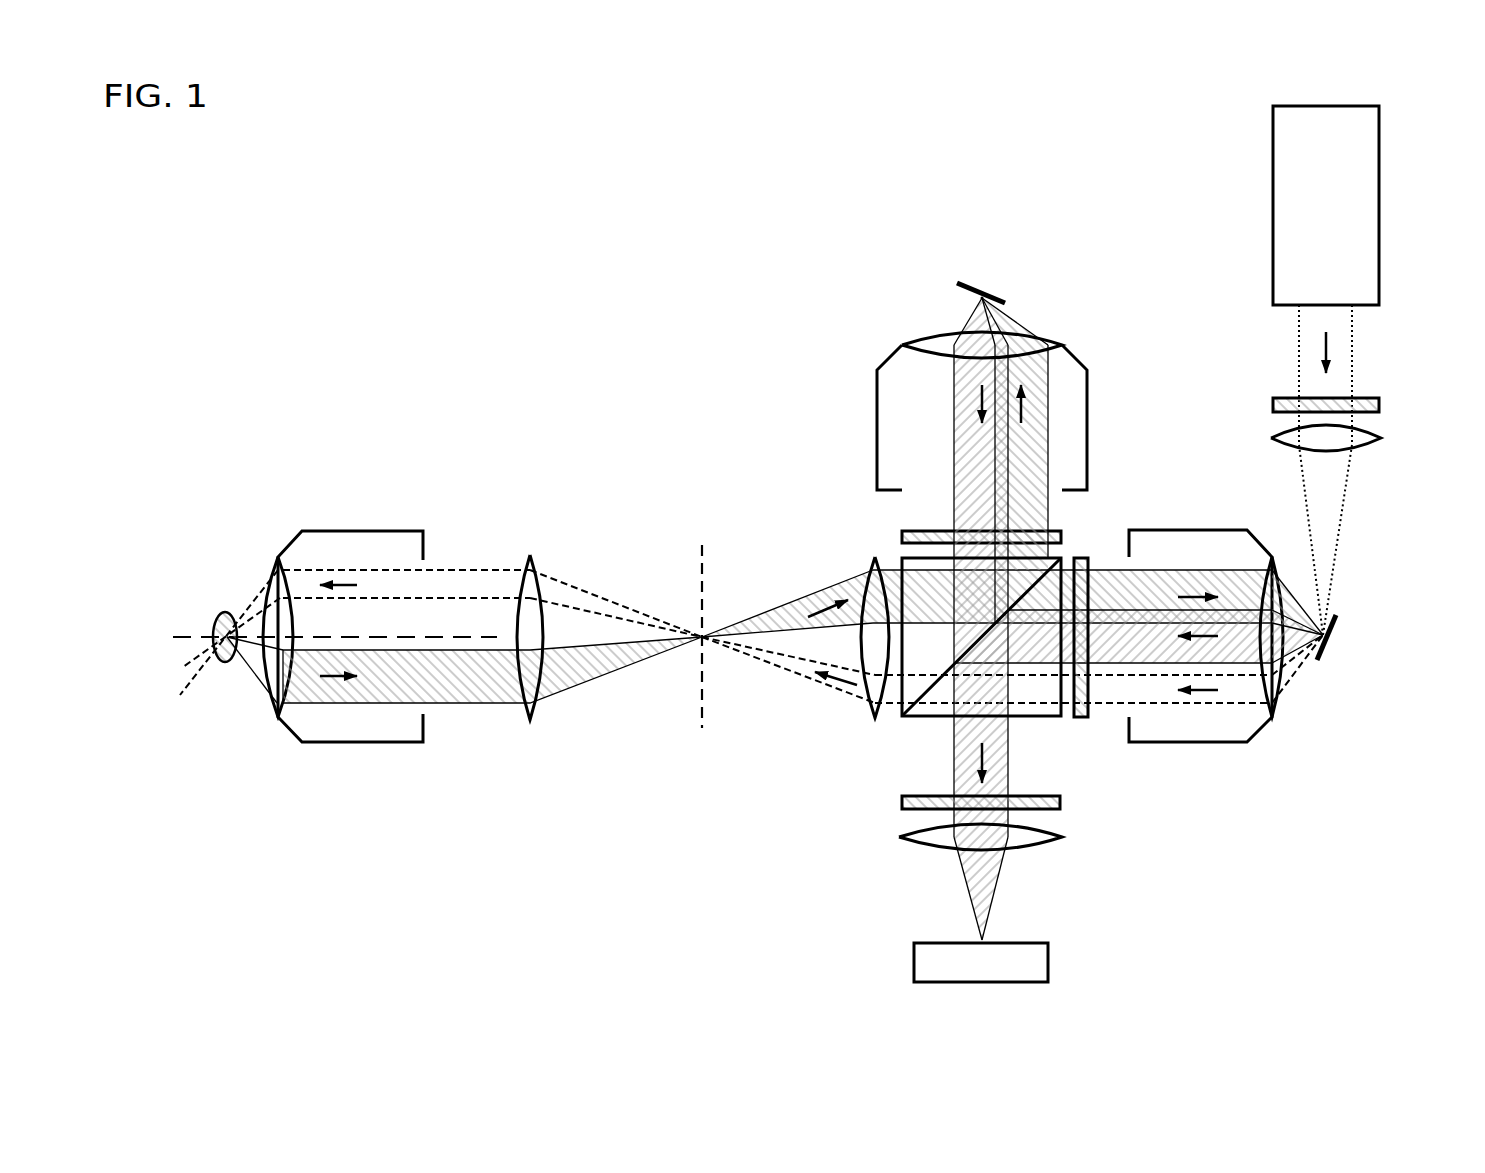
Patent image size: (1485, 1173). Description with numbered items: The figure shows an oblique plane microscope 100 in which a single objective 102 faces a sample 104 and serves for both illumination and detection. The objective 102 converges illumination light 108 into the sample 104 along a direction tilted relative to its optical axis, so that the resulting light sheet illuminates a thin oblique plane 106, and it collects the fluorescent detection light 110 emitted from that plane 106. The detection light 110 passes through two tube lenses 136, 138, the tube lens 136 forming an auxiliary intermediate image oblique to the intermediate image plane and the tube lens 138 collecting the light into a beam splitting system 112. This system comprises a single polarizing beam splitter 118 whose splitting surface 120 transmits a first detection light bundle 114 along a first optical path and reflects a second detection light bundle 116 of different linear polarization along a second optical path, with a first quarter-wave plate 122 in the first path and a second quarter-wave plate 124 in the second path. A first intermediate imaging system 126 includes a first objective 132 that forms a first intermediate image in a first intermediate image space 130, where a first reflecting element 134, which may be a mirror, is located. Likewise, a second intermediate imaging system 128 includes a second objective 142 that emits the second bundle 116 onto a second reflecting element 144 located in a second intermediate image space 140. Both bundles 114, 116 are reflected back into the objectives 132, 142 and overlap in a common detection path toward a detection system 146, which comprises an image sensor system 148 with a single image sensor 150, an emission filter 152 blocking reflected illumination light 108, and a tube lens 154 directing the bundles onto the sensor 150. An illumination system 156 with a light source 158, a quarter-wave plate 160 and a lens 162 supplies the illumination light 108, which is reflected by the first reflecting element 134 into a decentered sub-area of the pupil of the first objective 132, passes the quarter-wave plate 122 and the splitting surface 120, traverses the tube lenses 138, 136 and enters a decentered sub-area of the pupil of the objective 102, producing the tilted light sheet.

The oblique plane microscope 100 is at (614, 137).
The objective 102 is at (356, 529).
The sample 104 is at (222, 611).
The plane 106 is at (187, 683).
The illumination light 108 is at (431, 582).
The detection light 110 is at (478, 695).
The beam splitting system 112 is at (788, 773).
The first detection light bundle 114 is at (1200, 577).
The second detection light bundle 116 is at (1040, 402).
The polarizing beam splitter 118 is at (937, 695).
The splitting surface 120 is at (982, 637).
The first quarter-wave plate 122 is at (1085, 720).
The second quarter-wave plate 124 is at (902, 535).
The first intermediate imaging system 126 is at (1349, 733).
The second intermediate imaging system 128 is at (868, 260).
The first intermediate image space 130 is at (1297, 645).
The first objective 132 is at (1262, 727).
The first reflecting element 134 is at (1340, 622).
The tube lens 136 is at (539, 565).
The tube lens 138 is at (870, 567).
The second intermediate image space 140 is at (975, 313).
The second objective 142 is at (902, 345).
The second reflecting element 144 is at (978, 285).
The detection system 146 is at (1198, 916).
The image sensor system 148 is at (914, 962).
The image sensor 150 is at (1037, 960).
The emission filter 152 is at (902, 803).
The tube lens 154 is at (927, 848).
The illumination system 156 is at (1379, 207).
The light source 158 is at (1287, 207).
The quarter-wave plate 160 is at (1379, 405).
The lens 162 is at (1362, 450).